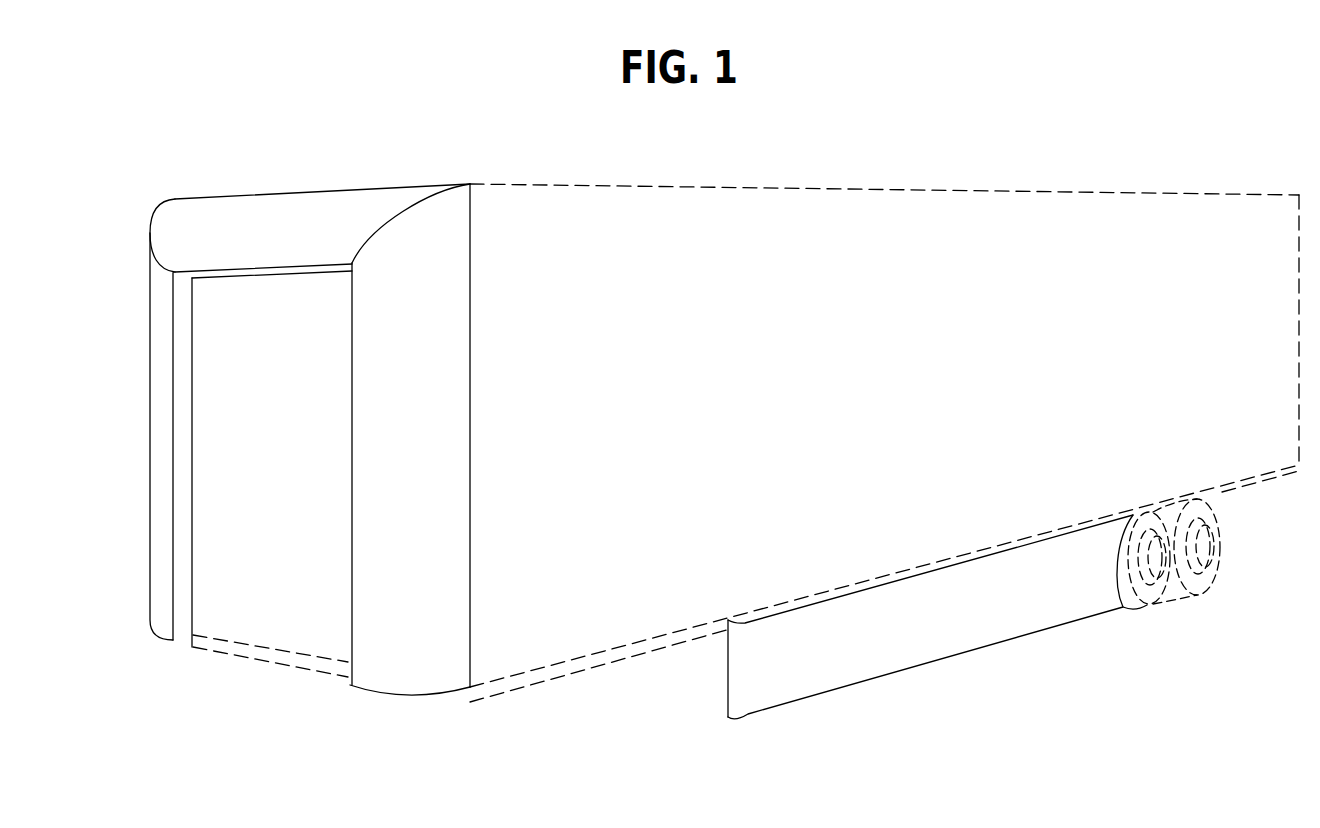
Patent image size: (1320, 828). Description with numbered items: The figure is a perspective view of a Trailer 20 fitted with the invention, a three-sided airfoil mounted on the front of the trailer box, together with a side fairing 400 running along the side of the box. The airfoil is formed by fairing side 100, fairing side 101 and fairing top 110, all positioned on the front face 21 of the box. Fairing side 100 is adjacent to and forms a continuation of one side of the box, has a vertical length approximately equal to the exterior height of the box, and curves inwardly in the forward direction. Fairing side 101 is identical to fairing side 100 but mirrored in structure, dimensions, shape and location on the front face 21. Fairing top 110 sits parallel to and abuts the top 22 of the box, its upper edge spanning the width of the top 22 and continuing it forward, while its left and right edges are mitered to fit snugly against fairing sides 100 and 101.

The trailer 20 is at (903, 386).
The front face 21 is at (273, 493).
The top of box 22 is at (392, 185).
The fairing side 100 is at (155, 290).
The fairing side 101 is at (453, 427).
The fairing top 110 is at (287, 200).
The side fairing 400 is at (858, 672).